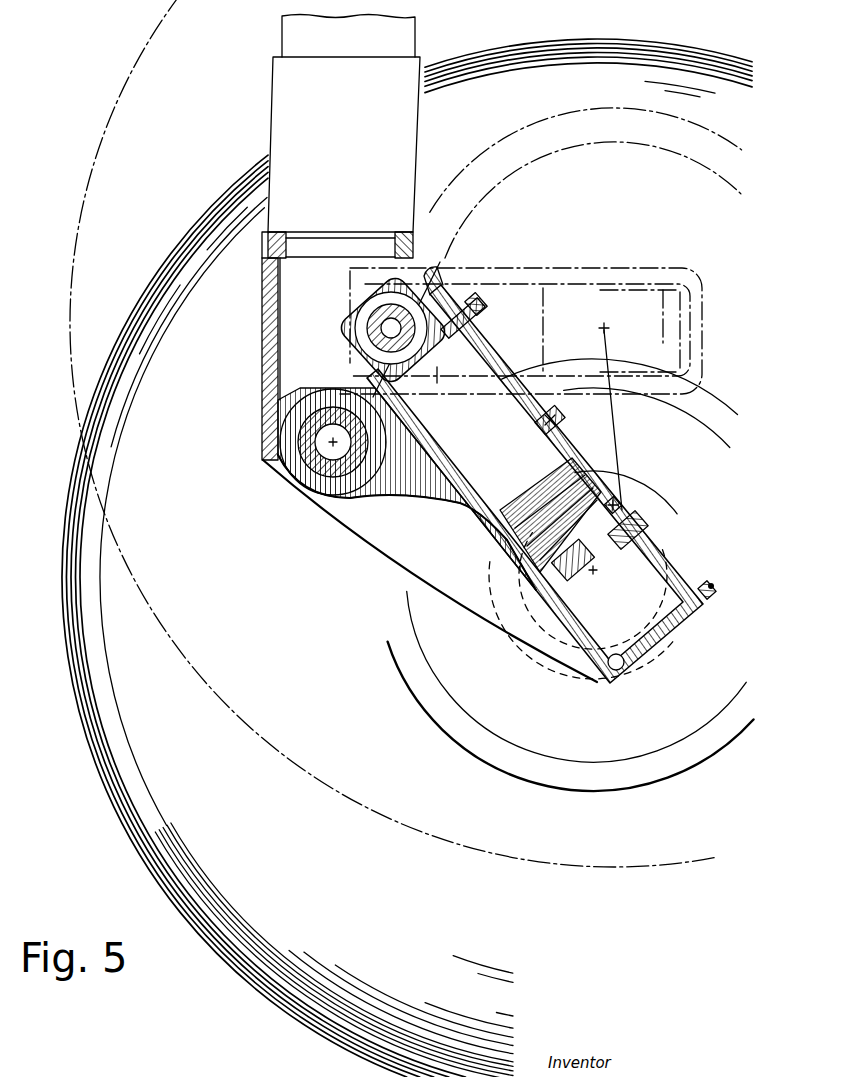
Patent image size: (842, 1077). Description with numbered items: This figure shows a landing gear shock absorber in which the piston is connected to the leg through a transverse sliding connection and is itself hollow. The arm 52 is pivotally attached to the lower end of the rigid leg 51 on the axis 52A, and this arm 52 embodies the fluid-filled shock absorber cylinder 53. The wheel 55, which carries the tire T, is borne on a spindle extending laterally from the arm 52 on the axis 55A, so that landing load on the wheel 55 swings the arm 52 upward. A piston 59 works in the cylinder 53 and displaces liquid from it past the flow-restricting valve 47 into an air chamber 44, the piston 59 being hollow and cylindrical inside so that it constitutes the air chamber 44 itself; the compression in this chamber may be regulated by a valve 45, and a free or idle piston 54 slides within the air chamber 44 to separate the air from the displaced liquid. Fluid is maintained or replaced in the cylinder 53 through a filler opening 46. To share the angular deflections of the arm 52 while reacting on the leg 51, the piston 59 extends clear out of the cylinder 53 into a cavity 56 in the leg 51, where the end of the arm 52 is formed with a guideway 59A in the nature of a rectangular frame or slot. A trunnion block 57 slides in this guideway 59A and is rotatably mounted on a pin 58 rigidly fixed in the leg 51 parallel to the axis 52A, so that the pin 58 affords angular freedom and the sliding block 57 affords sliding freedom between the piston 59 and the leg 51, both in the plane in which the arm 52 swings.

The tire T is at (97, 713).
The air chamber 44 is at (430, 348).
The valve 45 is at (480, 318).
The filler opening 46 is at (716, 594).
The flow-restricting valve 47 is at (618, 503).
The rigid leg 51 is at (303, 46).
The arm 52 is at (440, 508).
The axis 52A is at (330, 442).
The fluid-filled shock absorber cylinder 53 is at (690, 270).
The free or idle piston 54 is at (546, 290).
The wheel 55 is at (405, 620).
The axis 55A is at (592, 574).
The cavity 56 is at (278, 318).
The trunnion block 57 is at (372, 292).
The pin 58 is at (362, 352).
The piston 59 is at (638, 538).
The guideway 59A is at (430, 276).